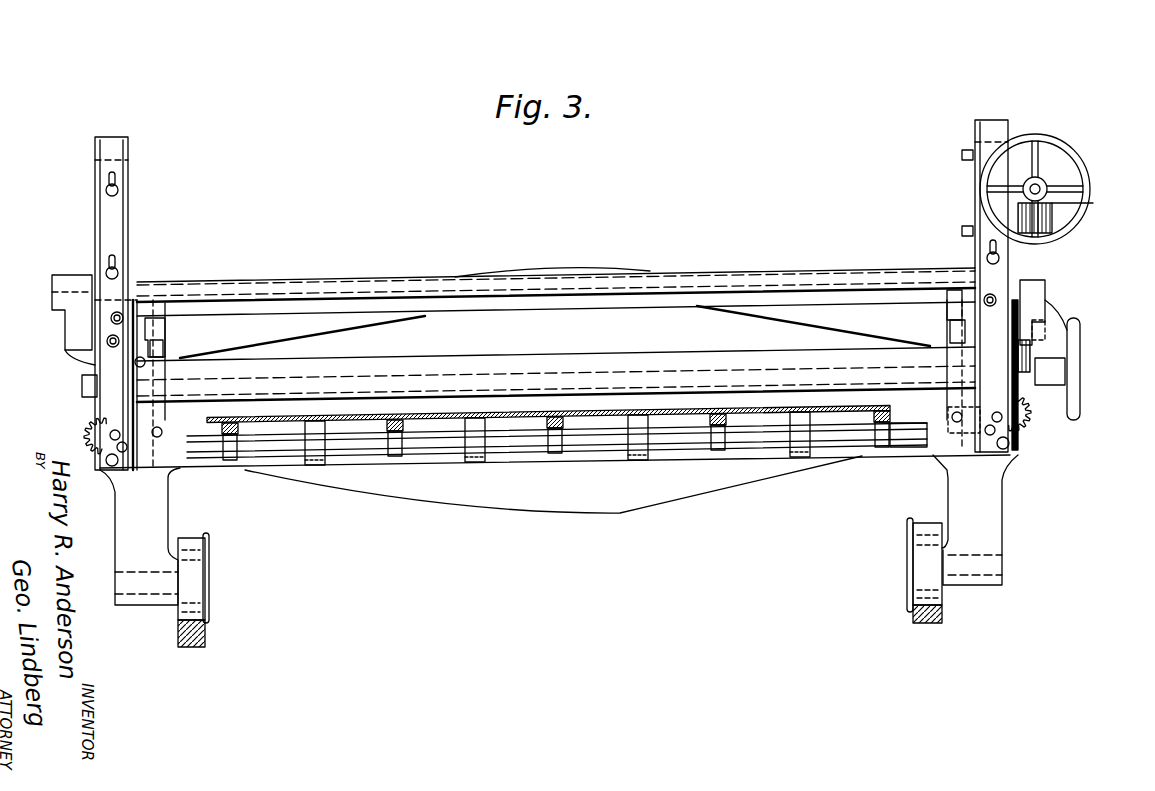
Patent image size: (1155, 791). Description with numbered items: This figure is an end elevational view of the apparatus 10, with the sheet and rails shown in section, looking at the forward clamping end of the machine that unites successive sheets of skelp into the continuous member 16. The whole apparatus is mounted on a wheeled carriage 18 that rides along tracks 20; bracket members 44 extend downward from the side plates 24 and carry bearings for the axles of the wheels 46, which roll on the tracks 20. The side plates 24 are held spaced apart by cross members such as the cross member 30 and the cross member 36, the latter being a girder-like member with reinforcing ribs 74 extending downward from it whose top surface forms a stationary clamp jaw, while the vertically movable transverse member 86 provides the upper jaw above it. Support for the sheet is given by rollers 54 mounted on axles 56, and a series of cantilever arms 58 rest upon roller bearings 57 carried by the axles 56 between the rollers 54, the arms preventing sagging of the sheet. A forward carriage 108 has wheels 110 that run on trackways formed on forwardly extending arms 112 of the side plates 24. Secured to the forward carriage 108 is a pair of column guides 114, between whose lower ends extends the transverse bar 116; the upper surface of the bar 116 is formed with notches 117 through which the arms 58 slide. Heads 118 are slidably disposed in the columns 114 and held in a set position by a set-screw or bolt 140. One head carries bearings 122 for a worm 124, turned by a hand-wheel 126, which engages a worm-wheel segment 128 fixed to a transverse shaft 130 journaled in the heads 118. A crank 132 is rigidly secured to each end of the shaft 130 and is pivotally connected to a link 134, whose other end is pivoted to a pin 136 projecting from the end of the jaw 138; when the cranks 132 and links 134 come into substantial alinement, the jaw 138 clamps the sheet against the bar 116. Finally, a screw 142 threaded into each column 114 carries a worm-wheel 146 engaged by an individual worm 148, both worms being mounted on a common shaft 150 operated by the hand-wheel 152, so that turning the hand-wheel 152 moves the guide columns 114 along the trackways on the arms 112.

The apparatus 10 is at (688, 267).
The continuous member 16 is at (508, 420).
The wheeled carriage 18 is at (112, 512).
The tracks 20 is at (207, 640).
The side plates 24 is at (166, 340).
The cross member 30 is at (561, 277).
The cross member 36 is at (524, 514).
The bracket member 44 is at (172, 520).
The wheels 46 is at (210, 552).
The rollers 54 is at (478, 462).
The axles 56 is at (586, 444).
The roller bearings 57 is at (396, 458).
The cantilever arms 58 is at (404, 420).
The reinforcing ribs 74 is at (549, 505).
The transverse member 86 is at (678, 402).
The forward carriage 108 is at (550, 308).
The wheels 110 is at (155, 318).
The forwardly extending arms 112 is at (168, 406).
The column guides 114 is at (129, 145).
The transverse bar 116 is at (362, 470).
The notches 117 is at (386, 424).
The heads 118 is at (92, 209).
The bearings 122 is at (1050, 172).
The worm 124 is at (1040, 168).
The hand-wheel 126 is at (1091, 176).
The worm-wheel segment 128 is at (1093, 203).
The shaft 130 is at (772, 270).
The crank 132 is at (62, 329).
The link 134 is at (85, 363).
The pin 136 is at (84, 388).
The jaw 138 is at (714, 362).
The set-screw or bolt 140 is at (120, 186).
The screw 142 is at (112, 448).
The worm-wheel 146 is at (84, 438).
The worm 148 is at (84, 376).
The common shaft 150 is at (466, 378).
The hand-wheel 152 is at (1082, 334).